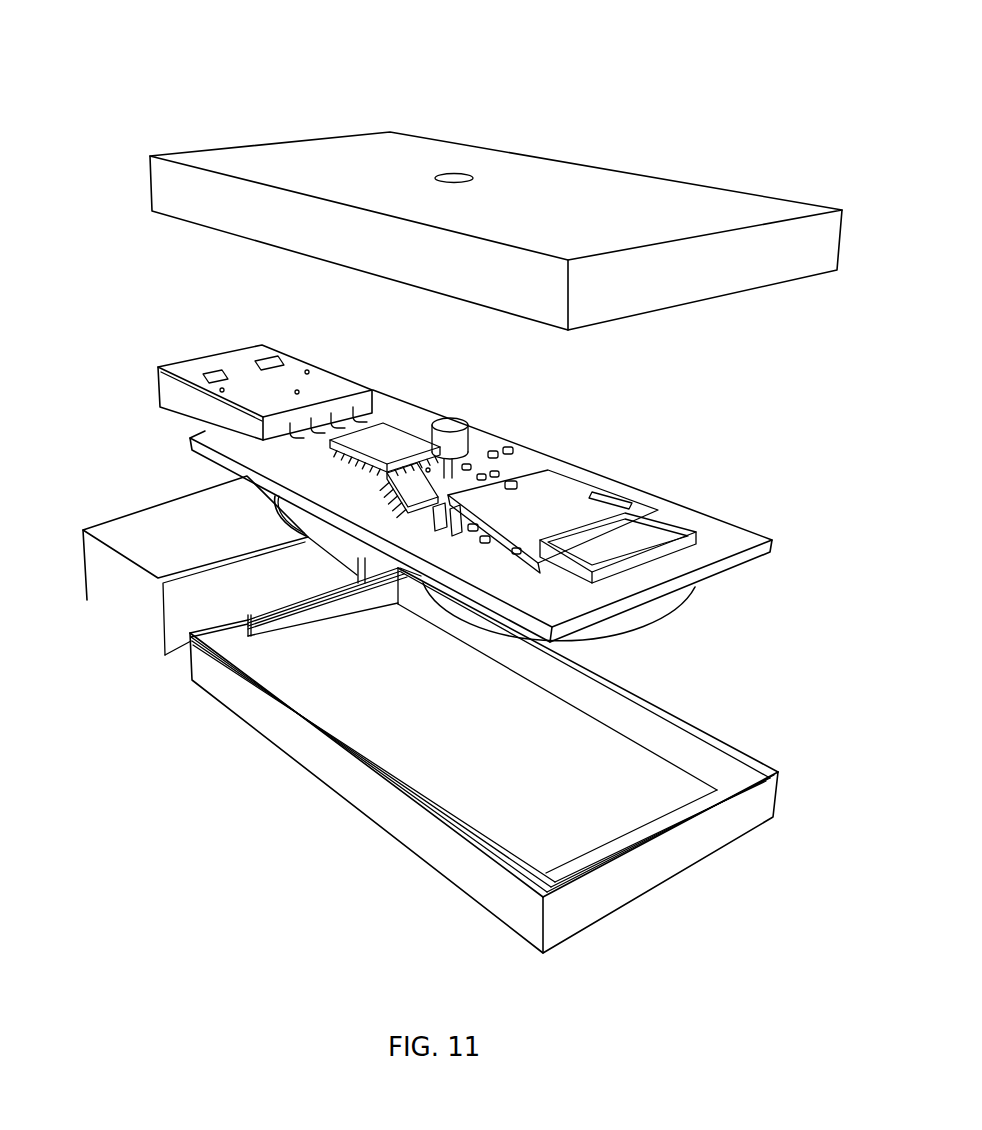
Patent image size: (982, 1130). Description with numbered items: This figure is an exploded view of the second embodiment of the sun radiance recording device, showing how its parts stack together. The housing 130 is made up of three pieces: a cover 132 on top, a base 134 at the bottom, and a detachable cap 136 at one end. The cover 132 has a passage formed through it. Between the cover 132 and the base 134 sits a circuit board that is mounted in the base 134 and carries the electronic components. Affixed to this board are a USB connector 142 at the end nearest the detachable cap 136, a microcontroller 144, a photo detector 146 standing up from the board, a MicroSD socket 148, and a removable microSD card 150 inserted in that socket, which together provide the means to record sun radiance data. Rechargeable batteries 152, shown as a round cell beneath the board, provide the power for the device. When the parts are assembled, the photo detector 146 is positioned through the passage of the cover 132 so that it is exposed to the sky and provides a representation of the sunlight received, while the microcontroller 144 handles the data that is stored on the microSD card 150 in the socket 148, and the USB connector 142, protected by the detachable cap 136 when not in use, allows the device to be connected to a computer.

The housing 130 is at (436, 78).
The cover 132 is at (451, 138).
The base 134 is at (445, 858).
The detachable cap 136 is at (120, 602).
The USB connector 142 is at (278, 354).
The microcontroller 144 is at (412, 427).
The photo detector 146 is at (463, 443).
The MicroSD socket 148 is at (585, 480).
The removable microSD card 150 is at (683, 533).
The rechargeable batteries 152 is at (676, 607).